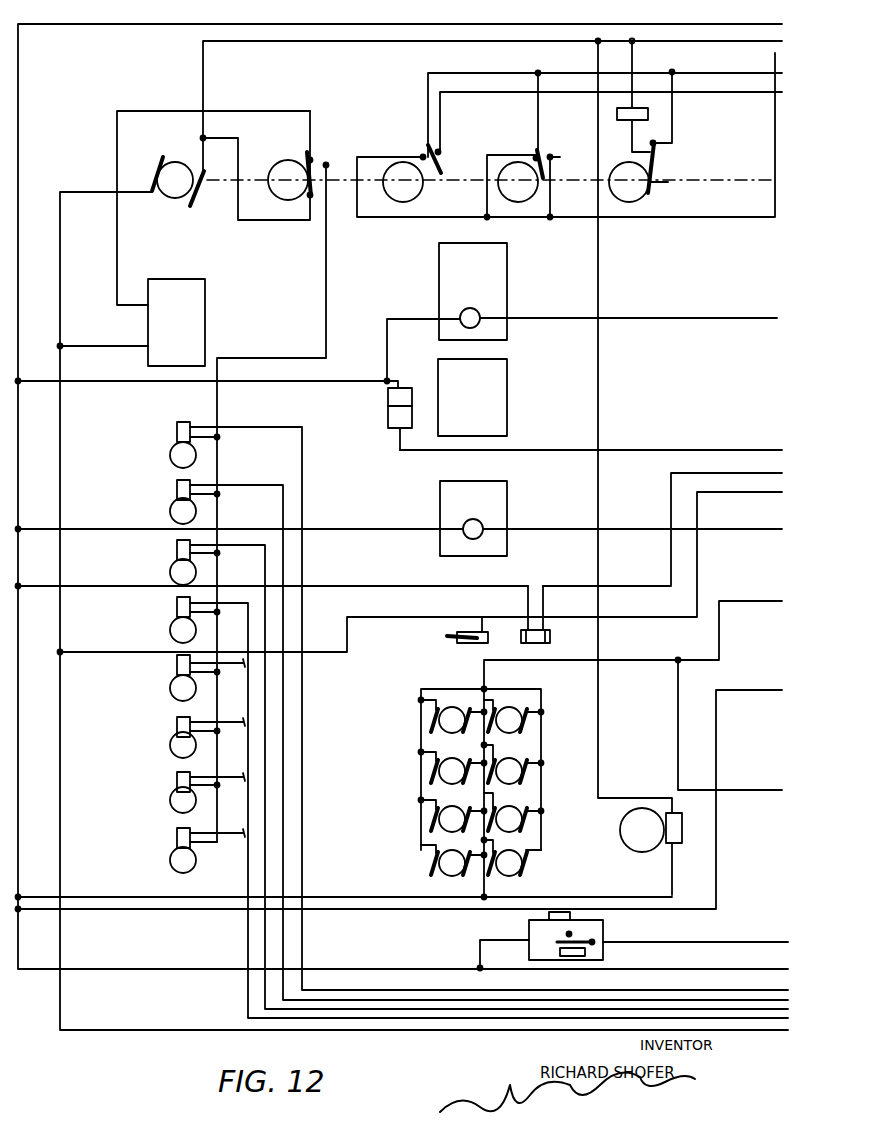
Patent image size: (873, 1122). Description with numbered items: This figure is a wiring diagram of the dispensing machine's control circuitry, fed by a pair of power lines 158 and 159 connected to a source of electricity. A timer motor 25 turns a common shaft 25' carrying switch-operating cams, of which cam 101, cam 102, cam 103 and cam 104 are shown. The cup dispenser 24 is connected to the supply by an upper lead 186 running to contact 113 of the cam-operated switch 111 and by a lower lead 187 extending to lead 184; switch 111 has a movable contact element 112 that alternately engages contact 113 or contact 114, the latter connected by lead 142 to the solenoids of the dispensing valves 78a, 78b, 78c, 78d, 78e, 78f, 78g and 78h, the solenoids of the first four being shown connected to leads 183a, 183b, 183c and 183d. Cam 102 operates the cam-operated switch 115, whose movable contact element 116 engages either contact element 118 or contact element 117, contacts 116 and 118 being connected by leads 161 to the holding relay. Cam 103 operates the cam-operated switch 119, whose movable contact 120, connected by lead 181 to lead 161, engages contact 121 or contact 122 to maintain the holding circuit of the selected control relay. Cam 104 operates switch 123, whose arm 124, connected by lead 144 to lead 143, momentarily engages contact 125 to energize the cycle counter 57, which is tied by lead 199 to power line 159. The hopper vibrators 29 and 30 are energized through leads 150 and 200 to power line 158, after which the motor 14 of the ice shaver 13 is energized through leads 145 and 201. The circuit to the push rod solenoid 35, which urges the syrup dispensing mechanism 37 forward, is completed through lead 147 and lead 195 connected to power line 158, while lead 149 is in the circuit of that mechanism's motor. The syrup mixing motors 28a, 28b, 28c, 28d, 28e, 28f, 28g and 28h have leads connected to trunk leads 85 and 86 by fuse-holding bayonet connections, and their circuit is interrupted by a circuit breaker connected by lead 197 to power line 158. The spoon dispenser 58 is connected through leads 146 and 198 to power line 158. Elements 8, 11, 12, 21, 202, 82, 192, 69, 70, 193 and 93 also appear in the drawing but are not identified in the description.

The power line 158 is at (18, 190).
The power line 159 is at (404, 43).
The upper lead 186 is at (117, 272).
The lead 184 is at (60, 514).
The lower lead 187 is at (84, 360).
The cup dispenser 24 is at (176, 322).
The timer motor 25 is at (167, 189).
The common shaft 25' is at (203, 196).
The switch operating cam 101 is at (290, 150).
The contact 113 is at (306, 158).
The cam-operated switch 111 is at (308, 150).
The movable contact element 112 is at (312, 158).
The contact 114 is at (330, 166).
The lead 142 is at (326, 283).
The cam 102 is at (388, 198).
The lead 143 is at (414, 218).
The cam-operated switch 115 is at (424, 144).
The contact element 118 is at (442, 158).
The contact element 117 is at (422, 154).
The movable contact element 116 is at (439, 176).
The lead 161 is at (728, 78).
The cam 103 is at (506, 198).
The cam-operated switch 119 is at (542, 150).
The lead 181 is at (540, 136).
The contact 121 is at (532, 150).
The contact 122 is at (550, 157).
The movable contact 120 is at (548, 180).
The lead 199 is at (636, 55).
The cycle counter 57 is at (648, 118).
The lead 144 is at (672, 140).
The contact 125 is at (664, 164).
The contact element 124 is at (664, 162).
The switch 123 is at (674, 182).
The cam 104 is at (628, 210).
The lead 200 is at (338, 380).
The feed unit 8 is at (506, 284).
The motor 11 is at (482, 300).
The conductor 21 is at (672, 302).
The conductor 202 is at (402, 376).
The hopper vibrator 29 is at (388, 396).
The hopper vibrator 30 is at (388, 428).
The lead 150 is at (768, 448).
The unit 12 is at (472, 397).
The ice shaver 13 is at (473, 518).
The motor 14 is at (476, 510).
The lead 201 is at (368, 516).
The lead 145 is at (762, 530).
The lead 147 is at (762, 462).
The lead 149 is at (756, 483).
The lead 195 is at (410, 572).
The push rod solenoid 35 is at (540, 643).
The syrup dispensing mechanism 37 is at (462, 642).
The trunk lead 85 is at (768, 594).
The conductor 82 is at (768, 780).
The lead 197 is at (764, 680).
The conductor 192 is at (600, 774).
The motor 69 is at (642, 830).
The switch 70 is at (682, 824).
The trunk lead 86 is at (374, 882).
The conductor 193 is at (150, 912).
The lead 198 is at (418, 956).
The conductor 93 is at (758, 956).
The spoon dispenser 58 is at (520, 932).
The lead 146 is at (762, 926).
The syrup mixing motor 28a is at (436, 858).
The syrup mixing motor 28b is at (434, 816).
The syrup mixing motor 28c is at (432, 766).
The syrup mixing motor 28d is at (434, 718).
The syrup mixing motor 28e is at (530, 718).
The syrup mixing motor 28f is at (530, 764).
The syrup mixing motor 28g is at (530, 814).
The syrup mixing motor 28h is at (522, 860).
The dispensing valve 78a is at (174, 440).
The dispensing valve 78b is at (174, 506).
The dispensing valve 78c is at (176, 555).
The dispensing valve 78d is at (176, 614).
The dispensing valve 78e is at (172, 680).
The dispensing valve 78f is at (170, 740).
The dispensing valve 78g is at (172, 798).
The dispensing valve 78h is at (172, 860).
The lead 183a is at (508, 992).
The lead 183b is at (586, 998).
The lead 183c is at (658, 1006).
The lead 183d is at (750, 1014).